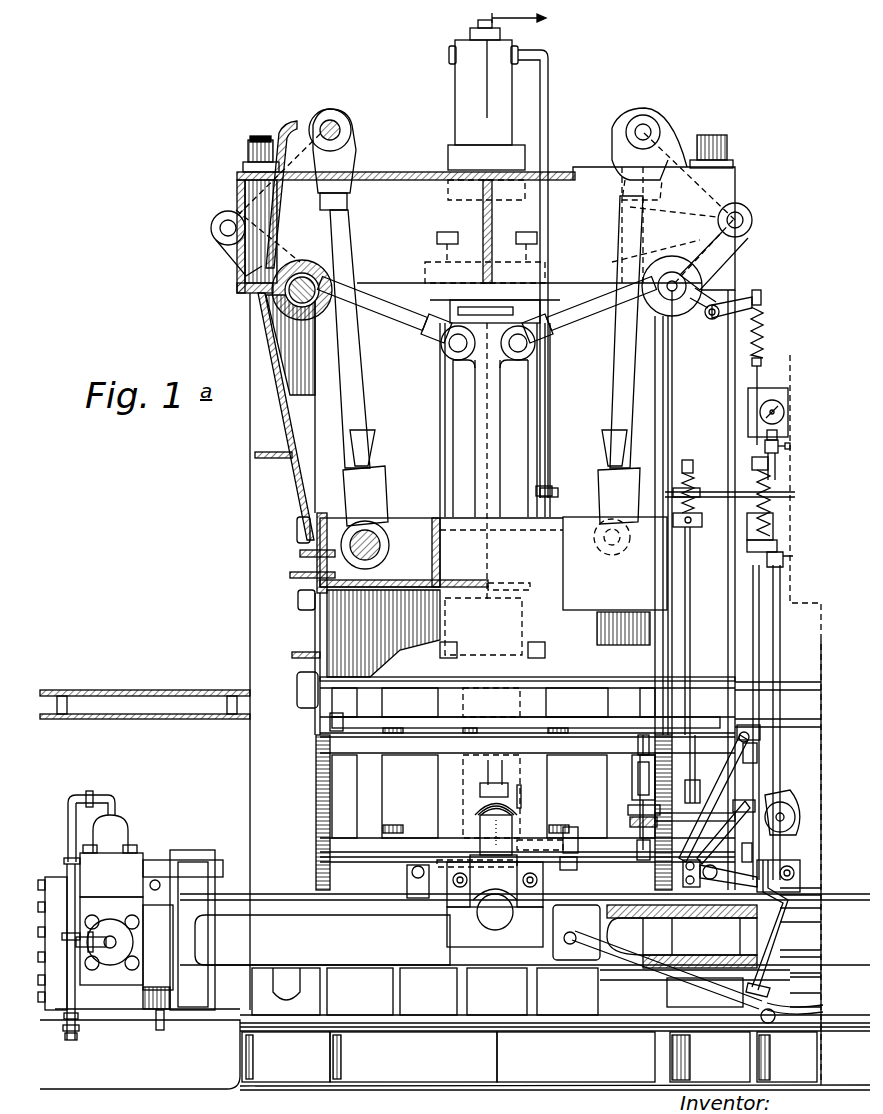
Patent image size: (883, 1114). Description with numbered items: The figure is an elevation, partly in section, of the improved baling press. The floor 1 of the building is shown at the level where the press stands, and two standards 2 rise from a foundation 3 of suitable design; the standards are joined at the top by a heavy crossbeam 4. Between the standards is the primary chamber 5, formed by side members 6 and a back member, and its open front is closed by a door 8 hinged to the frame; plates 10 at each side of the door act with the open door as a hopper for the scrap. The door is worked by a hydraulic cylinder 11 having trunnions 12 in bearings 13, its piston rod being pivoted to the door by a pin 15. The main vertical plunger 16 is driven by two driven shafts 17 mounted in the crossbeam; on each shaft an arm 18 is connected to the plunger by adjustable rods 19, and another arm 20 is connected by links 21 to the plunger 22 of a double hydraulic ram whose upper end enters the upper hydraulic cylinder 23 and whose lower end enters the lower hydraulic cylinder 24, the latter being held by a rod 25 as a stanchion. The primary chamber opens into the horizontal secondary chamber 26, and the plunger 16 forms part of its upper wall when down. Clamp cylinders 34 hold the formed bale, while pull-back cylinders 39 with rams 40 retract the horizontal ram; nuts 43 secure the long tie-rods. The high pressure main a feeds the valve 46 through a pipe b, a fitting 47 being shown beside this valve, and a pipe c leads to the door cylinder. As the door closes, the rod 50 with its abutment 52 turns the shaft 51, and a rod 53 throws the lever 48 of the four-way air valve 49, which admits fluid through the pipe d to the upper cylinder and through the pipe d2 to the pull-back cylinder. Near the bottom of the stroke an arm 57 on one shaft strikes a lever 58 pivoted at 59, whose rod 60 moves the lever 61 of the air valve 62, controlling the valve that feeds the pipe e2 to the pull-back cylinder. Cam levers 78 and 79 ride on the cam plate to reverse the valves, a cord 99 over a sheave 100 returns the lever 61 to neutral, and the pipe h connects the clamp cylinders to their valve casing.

The floor 1 is at (145, 695).
The standards 2 is at (492, 510).
The foundation 3 is at (455, 1027).
The crossbeam 4 is at (486, 247).
The primary chamber 5 is at (527, 635).
The side members 6 is at (305, 668).
The door 8 is at (525, 794).
The plates 10 is at (668, 626).
The cylinder 11 is at (493, 833).
The trunnions 12 is at (466, 860).
The bearings 13 is at (528, 890).
The pin 15 is at (512, 792).
The plunger 16 is at (478, 563).
The driven shafts 17 is at (272, 300).
The arm 18 is at (493, 169).
The rods 19 is at (360, 398).
The arm 20 is at (740, 255).
The links 21 is at (395, 312).
The plunger 22 is at (488, 473).
The upper hydraulic cylinder 23 is at (465, 90).
The lower hydraulic cylinder 24 is at (470, 791).
The rod 25 is at (444, 450).
The secondary chamber 26 is at (240, 250).
The cylinders 34 is at (118, 828).
The pull-back cylinders 39 is at (322, 940).
The rams 40 is at (703, 956).
The nuts 43 is at (178, 866).
The valve 46 is at (757, 752).
The pin 47 is at (760, 733).
The lever 48 is at (690, 460).
The four-way air valve 49 is at (694, 480).
The rod 50 is at (644, 772).
The shaft 51 is at (705, 791).
The abutment 52 is at (640, 846).
The rod 53 is at (695, 755).
The arm 57 is at (655, 268).
The lever 58 is at (735, 310).
The pivot 59 is at (712, 319).
The rod 60 is at (758, 380).
The lever 61 is at (757, 462).
The air valve 62 is at (770, 486).
The cam lever 78 is at (787, 865).
The cam lever 79 is at (746, 848).
The cord 99 is at (780, 656).
The sheave 100 is at (790, 808).
The high pressure hydraulic main a is at (652, 750).
The pipe b is at (578, 842).
The pipe c is at (458, 898).
The pipe d is at (549, 125).
The pipe d2 is at (548, 840).
The pipe e2 is at (648, 968).
The pipe h is at (67, 826).